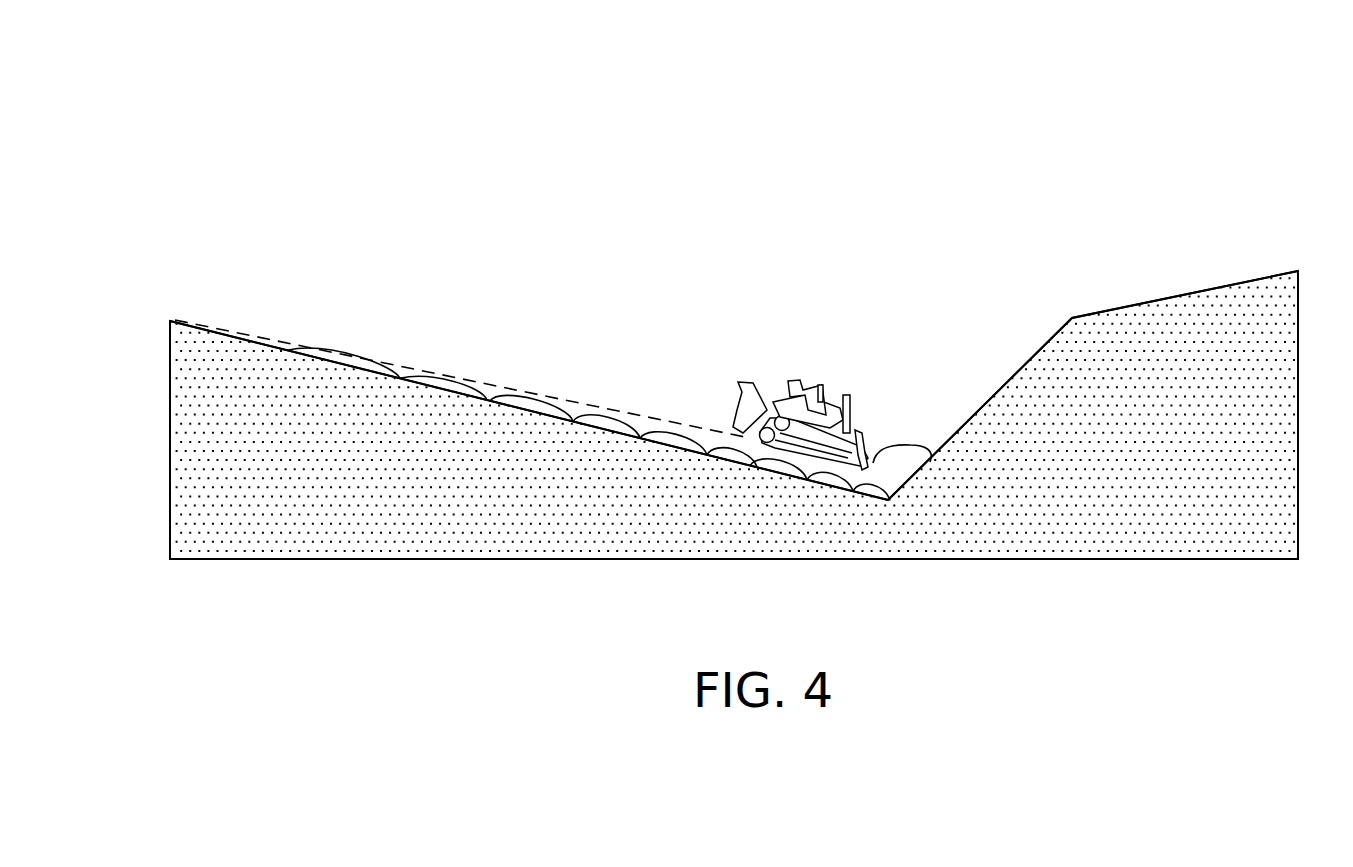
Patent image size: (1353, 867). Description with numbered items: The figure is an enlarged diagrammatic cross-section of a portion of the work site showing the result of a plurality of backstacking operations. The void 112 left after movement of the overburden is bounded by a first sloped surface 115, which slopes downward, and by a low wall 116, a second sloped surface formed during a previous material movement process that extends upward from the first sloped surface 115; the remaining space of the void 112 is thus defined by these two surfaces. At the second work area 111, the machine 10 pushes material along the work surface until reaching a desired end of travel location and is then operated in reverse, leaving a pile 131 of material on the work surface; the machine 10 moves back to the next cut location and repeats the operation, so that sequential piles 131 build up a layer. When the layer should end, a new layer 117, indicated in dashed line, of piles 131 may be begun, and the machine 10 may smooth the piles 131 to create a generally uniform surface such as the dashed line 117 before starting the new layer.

The machine 10 is at (804, 362).
The second work area 111 is at (866, 218).
The void 112 is at (983, 133).
The first sloped surface 115 is at (248, 333).
The low wall 116 is at (1008, 380).
The new layer 117 is at (498, 388).
The pile 131 is at (603, 418).